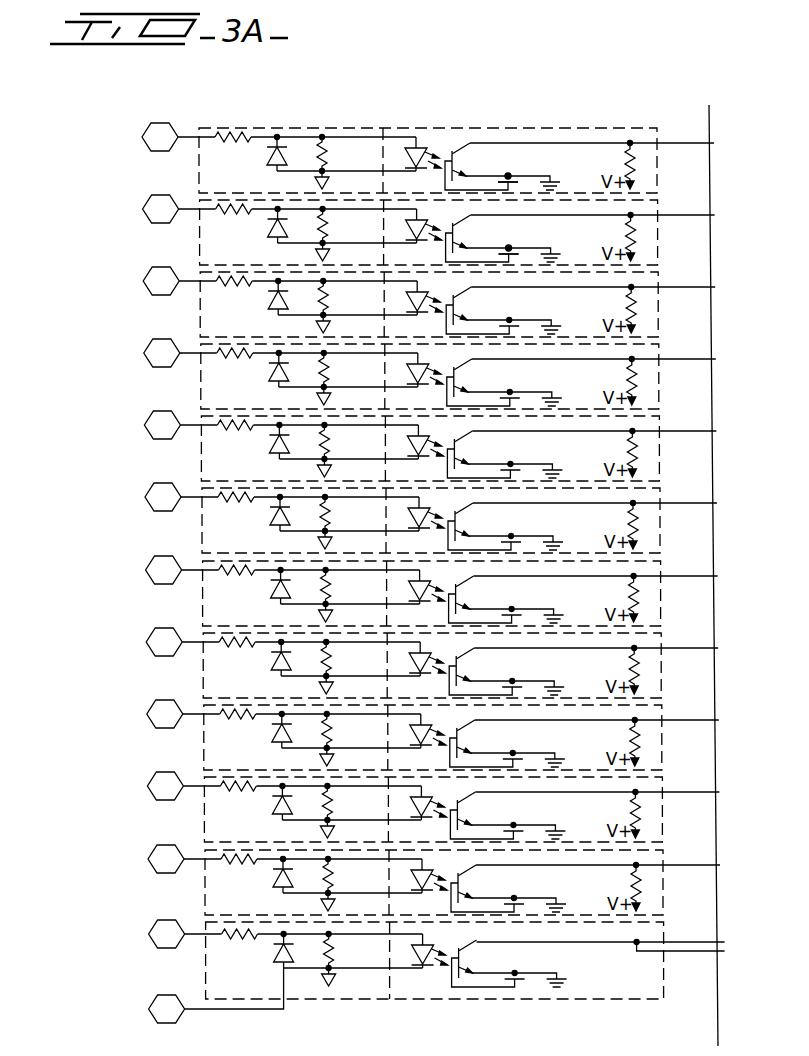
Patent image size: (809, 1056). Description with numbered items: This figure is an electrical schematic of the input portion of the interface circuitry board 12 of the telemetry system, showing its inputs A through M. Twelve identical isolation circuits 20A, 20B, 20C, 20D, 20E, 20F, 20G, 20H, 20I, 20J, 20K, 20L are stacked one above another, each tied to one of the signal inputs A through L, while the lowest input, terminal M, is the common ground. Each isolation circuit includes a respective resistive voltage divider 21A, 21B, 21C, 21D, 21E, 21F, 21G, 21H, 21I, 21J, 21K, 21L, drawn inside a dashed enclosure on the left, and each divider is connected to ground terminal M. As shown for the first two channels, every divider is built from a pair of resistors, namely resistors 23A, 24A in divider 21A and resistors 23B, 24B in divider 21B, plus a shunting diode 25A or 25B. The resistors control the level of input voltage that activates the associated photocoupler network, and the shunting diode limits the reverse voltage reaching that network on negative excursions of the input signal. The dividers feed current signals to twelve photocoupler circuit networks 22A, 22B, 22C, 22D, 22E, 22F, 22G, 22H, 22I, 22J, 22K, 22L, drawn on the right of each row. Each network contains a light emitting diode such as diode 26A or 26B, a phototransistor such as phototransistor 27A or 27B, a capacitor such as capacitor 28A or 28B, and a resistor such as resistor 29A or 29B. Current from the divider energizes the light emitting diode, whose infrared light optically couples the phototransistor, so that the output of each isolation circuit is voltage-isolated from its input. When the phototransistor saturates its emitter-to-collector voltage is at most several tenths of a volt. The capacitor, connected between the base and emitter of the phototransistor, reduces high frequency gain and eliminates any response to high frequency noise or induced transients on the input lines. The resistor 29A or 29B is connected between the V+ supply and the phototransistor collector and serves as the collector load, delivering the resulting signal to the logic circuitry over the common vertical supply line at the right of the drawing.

The interface circuitry board 12 is at (385, 563).
The isolation circuit 20A is at (306, 140).
The isolation circuit 20B is at (308, 231).
The isolation circuit 20C is at (309, 300).
The isolation circuit 20D is at (310, 372).
The isolation circuit 20E is at (308, 444).
The isolation circuit 20F is at (308, 516).
The isolation circuit 20G is at (305, 589).
The isolation circuit 20H is at (307, 661).
The isolation circuit 20I is at (312, 733).
The isolation circuit 20J is at (314, 805).
The isolation circuit 20K is at (311, 878).
The isolation circuit 20L is at (310, 971).
The resistive voltage divider 21A is at (428, 133).
The resistive voltage divider 21B is at (377, 239).
The resistive voltage divider 21C is at (373, 313).
The resistive voltage divider 21D is at (374, 385).
The resistive voltage divider 21E is at (371, 457).
The resistive voltage divider 21F is at (374, 529).
The resistive voltage divider 21G is at (372, 599).
The resistive voltage divider 21H is at (374, 673).
The resistive voltage divider 21I is at (377, 745).
The resistive voltage divider 21J is at (376, 818).
The resistive voltage divider 21K is at (374, 892).
The resistive voltage divider 21L is at (374, 965).
The photocoupler circuit network 22A is at (592, 140).
The photocoupler circuit network 22B is at (593, 239).
The photocoupler circuit network 22C is at (593, 311).
The photocoupler circuit network 22D is at (594, 383).
The photocoupler circuit network 22E is at (594, 455).
The photocoupler circuit network 22F is at (595, 527).
The photocoupler circuit network 22G is at (596, 600).
The photocoupler circuit network 22H is at (596, 672).
The photocoupler circuit network 22I is at (597, 744).
The photocoupler circuit network 22J is at (597, 816).
The photocoupler circuit network 22K is at (598, 889).
The photocoupler circuit network 22L is at (601, 976).
The resistor 23A is at (225, 153).
The resistor 23B is at (226, 223).
The resistor 24A is at (342, 163).
The resistor 24B is at (343, 235).
The shunting diode 25A is at (246, 165).
The shunting diode 25B is at (247, 238).
The light emitting diode 26A is at (422, 128).
The light emitting diode 26B is at (418, 238).
The phototransistor 27A is at (502, 141).
The phototransistor 27B is at (503, 237).
The capacitor 28A is at (531, 165).
The capacitor 28B is at (535, 233).
The resistor 29A is at (600, 140).
The resistor 29B is at (603, 239).